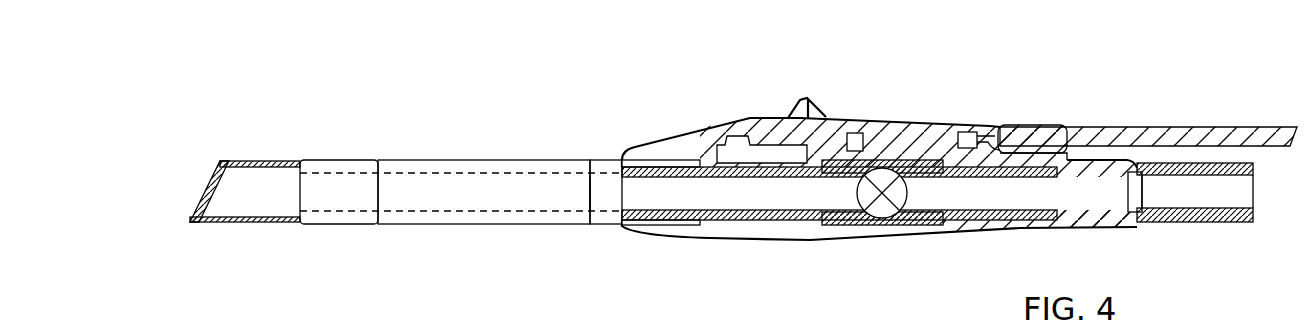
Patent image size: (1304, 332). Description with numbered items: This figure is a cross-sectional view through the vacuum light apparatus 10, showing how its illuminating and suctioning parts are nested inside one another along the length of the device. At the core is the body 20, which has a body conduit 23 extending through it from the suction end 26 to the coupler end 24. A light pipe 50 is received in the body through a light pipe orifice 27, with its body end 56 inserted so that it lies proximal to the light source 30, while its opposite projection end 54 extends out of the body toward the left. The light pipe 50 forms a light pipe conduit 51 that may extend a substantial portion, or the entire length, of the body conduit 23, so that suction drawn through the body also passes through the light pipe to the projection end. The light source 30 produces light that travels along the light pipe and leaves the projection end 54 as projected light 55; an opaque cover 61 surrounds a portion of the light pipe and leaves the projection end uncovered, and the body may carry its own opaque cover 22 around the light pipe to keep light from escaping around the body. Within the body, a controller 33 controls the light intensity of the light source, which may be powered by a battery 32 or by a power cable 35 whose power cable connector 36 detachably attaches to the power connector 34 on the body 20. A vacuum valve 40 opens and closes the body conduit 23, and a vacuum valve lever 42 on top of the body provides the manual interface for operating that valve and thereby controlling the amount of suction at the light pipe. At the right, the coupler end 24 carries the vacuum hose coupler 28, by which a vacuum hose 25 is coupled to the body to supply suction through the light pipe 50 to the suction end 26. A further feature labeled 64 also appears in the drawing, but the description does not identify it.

The vacuum light apparatus 10 is at (1144, 98).
The body 20 is at (863, 123).
The opaque cover 22 is at (713, 127).
The body conduit 23 is at (950, 228).
The coupler end 24 is at (1077, 210).
The vacuum hose 25 is at (1212, 213).
The suction end 26 is at (587, 193).
The light pipe orifice 27 is at (658, 227).
The vacuum hose coupler 28 is at (1100, 211).
The light source 30 is at (704, 148).
The battery 32 is at (865, 131).
The controller 33 is at (725, 137).
The power connector 34 is at (977, 128).
The power cable 35 is at (1220, 140).
The power cable connector 36 is at (1023, 137).
The vacuum valve 40 is at (903, 163).
The vacuum valve lever 42 is at (802, 98).
The light pipe 50 is at (533, 180).
The light pipe conduit 51 is at (333, 160).
The projection end 54 is at (208, 190).
The projected light 55 is at (418, 187).
The body end 56 is at (700, 224).
The opaque cover 61 is at (552, 163).
The element 64 is at (529, 327).